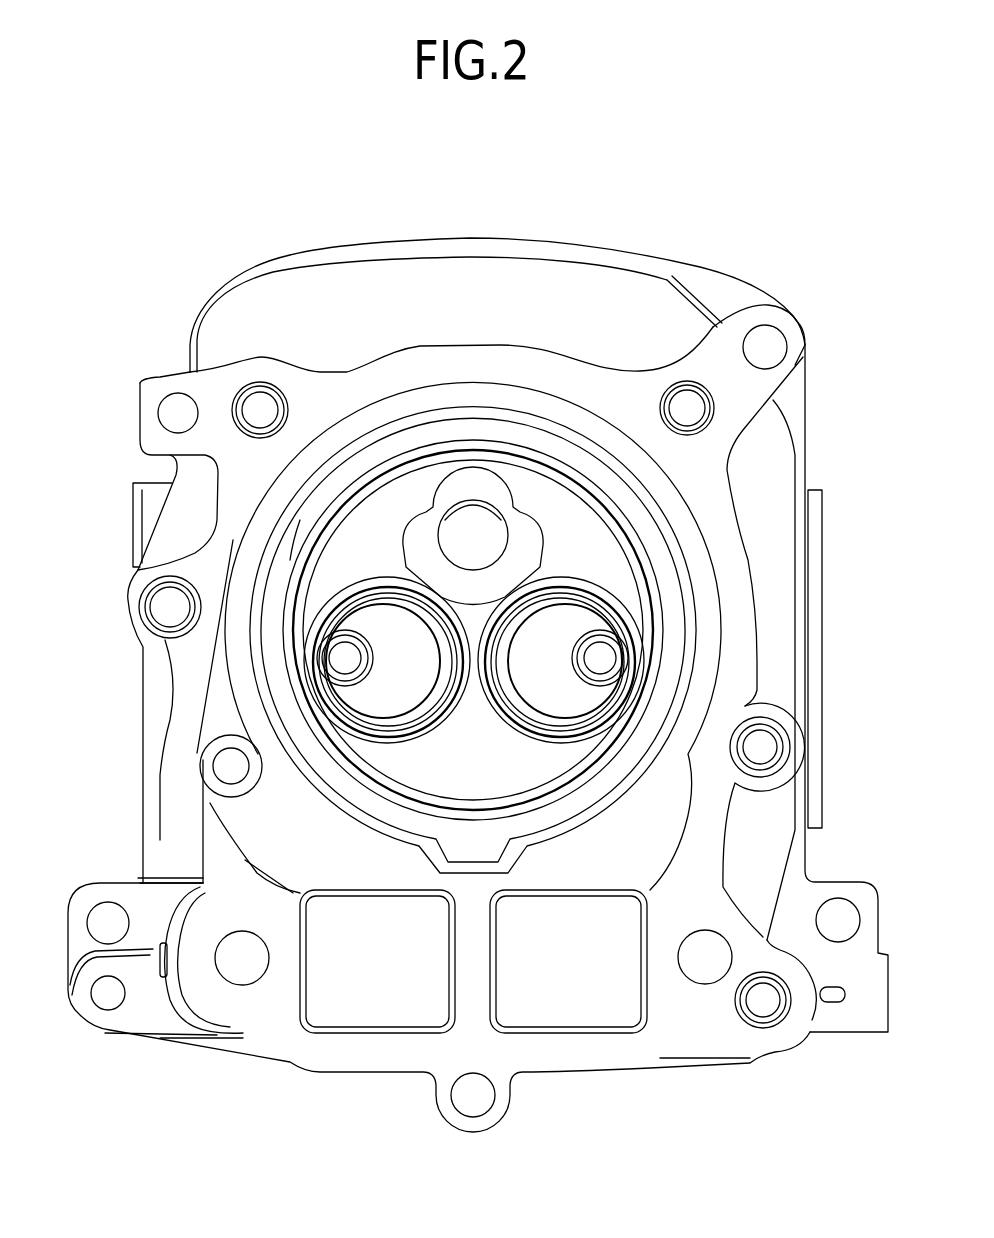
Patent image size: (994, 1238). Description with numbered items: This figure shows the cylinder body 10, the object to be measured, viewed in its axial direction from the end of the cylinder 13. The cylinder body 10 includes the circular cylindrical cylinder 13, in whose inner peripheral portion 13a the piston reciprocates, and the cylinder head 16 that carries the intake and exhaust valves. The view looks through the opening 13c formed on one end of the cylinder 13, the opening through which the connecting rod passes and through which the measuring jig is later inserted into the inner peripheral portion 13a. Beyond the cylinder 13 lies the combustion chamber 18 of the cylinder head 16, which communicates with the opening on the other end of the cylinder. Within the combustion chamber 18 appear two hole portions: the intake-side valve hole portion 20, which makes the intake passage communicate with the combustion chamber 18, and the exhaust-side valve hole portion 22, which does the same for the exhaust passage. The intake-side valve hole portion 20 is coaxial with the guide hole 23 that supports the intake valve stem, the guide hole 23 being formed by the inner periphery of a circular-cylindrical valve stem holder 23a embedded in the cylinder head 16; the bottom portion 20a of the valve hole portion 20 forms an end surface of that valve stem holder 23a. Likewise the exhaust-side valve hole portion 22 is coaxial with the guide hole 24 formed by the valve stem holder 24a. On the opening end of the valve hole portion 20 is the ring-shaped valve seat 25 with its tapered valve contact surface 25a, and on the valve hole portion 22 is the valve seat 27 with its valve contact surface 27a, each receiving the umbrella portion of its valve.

The cylinder body 10 is at (298, 142).
The cylinder 13 is at (371, 445).
The inner peripheral portion 13a is at (343, 498).
The opening 13c is at (513, 477).
The cylinder head 16 is at (382, 237).
The combustion chamber 18 is at (560, 510).
The intake-side valve hole portion 20 is at (362, 707).
The bottom portion 20a is at (345, 646).
The exhaust-side valve hole portion 22 is at (640, 690).
The guide hole 23 is at (316, 655).
The valve stem holder 23a is at (322, 620).
The guide hole 24 is at (605, 660).
The valve stem holder 24a is at (610, 633).
The valve seat 25 is at (372, 737).
The valve contact surface 25a is at (422, 697).
The valve seat 27 is at (578, 740).
The valve contact surface 27a is at (592, 712).